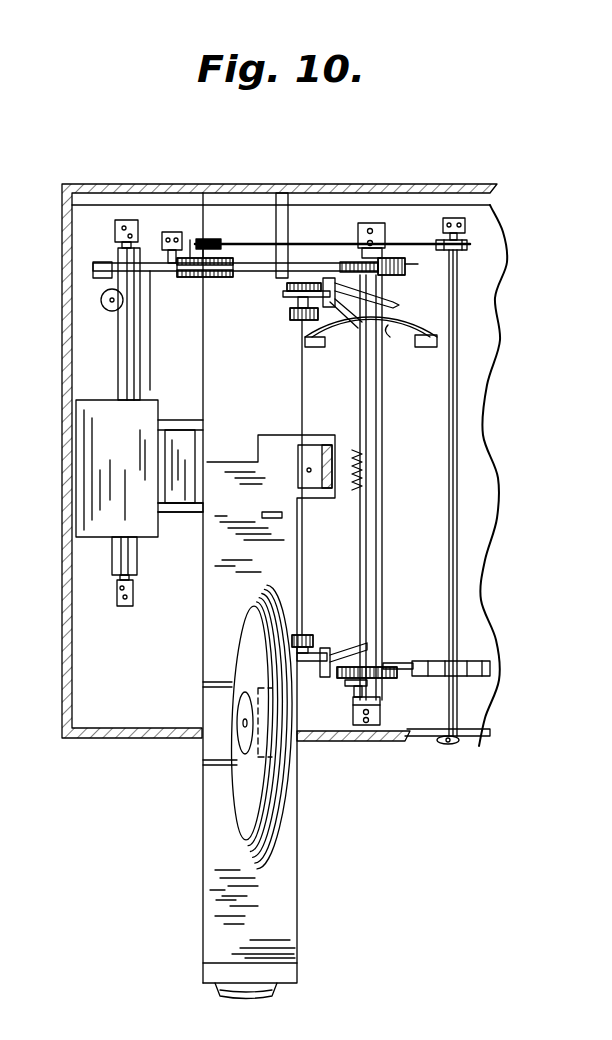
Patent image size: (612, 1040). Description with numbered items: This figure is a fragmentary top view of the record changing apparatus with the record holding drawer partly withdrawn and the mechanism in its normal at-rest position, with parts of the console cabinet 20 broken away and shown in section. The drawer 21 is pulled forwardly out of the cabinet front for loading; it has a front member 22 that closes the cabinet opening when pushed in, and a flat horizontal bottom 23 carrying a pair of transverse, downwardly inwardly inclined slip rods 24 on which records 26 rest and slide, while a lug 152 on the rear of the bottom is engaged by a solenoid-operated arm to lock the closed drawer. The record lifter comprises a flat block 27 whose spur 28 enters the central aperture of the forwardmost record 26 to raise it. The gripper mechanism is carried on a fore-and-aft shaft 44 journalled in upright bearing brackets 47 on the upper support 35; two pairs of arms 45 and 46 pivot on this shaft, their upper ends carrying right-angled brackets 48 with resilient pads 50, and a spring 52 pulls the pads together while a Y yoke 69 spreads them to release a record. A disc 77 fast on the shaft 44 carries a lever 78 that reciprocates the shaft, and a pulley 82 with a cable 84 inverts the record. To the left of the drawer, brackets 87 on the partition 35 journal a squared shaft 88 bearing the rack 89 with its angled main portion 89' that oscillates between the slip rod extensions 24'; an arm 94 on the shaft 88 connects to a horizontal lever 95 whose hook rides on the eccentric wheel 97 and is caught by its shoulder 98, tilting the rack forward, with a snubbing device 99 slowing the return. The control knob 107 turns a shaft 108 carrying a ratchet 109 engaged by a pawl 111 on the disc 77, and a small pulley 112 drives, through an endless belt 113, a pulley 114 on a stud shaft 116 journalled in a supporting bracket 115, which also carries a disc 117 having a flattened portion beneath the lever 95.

The console cabinet 20 is at (76, 740).
The drawer 21 is at (307, 960).
The front member 22 is at (209, 980).
The bottom 23 is at (228, 914).
The slip rods 24 is at (220, 588).
The slip rod extensions 24' is at (205, 484).
The record 26 is at (256, 768).
The block 27 is at (318, 445).
The spur 28 is at (309, 473).
The upper support 35 is at (418, 432).
The shaft 44 is at (368, 555).
The arms 45 is at (354, 322).
The arms 46 is at (330, 670).
The bearing brackets 47 is at (365, 236).
The bearing brackets 48 is at (326, 347).
The pads 50 is at (296, 320).
The spring 52 is at (356, 456).
The Y yoke 69 is at (424, 348).
The disc 77 is at (368, 667).
The lever 78 is at (355, 689).
The pulley 82 is at (286, 290).
The cable 84 is at (345, 298).
The brackets 87 is at (131, 236).
The squared shaft 88 is at (136, 385).
The rack 89 is at (135, 463).
The main supporting portion 89' is at (146, 461).
The arm 94 is at (100, 270).
The lever 95 is at (153, 272).
The wheel 97 is at (392, 258).
The shoulder 98 is at (407, 268).
The snubbing device 99 is at (108, 306).
The control knob 107 is at (447, 745).
The shaft 108 is at (452, 479).
The ratchet 109 is at (432, 677).
The pawl 111 is at (400, 663).
The pulley 112 is at (462, 247).
The endless belt 113 is at (300, 244).
The pulley 114 is at (203, 239).
The supporting bracket 115 is at (190, 240).
The stud shaft 116 is at (178, 257).
The disc 117 is at (200, 278).
The lug 152 is at (272, 512).